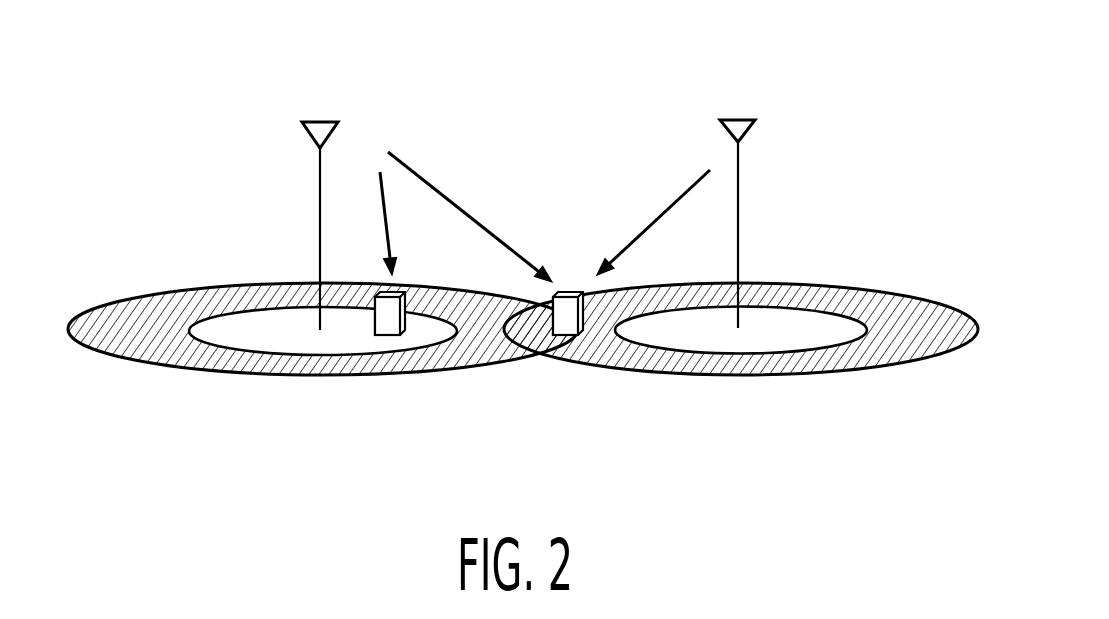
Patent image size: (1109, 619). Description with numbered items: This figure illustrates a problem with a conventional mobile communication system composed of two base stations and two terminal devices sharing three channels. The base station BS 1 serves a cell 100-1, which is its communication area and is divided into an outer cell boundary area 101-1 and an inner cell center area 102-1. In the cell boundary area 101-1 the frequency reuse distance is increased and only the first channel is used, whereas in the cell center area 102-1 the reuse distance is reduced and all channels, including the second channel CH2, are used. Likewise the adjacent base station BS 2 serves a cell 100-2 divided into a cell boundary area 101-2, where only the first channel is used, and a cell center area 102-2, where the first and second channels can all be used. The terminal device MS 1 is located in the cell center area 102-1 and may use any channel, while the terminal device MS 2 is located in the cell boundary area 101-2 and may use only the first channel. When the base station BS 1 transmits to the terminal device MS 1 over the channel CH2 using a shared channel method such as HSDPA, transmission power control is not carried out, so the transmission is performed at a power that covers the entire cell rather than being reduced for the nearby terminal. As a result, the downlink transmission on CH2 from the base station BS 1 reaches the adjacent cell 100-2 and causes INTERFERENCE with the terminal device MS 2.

The cell 100-1 is at (178, 368).
The cell 100-2 is at (857, 372).
The cell boundary area 101-1 is at (150, 315).
The cell boundary area 101-2 is at (910, 317).
The cell center area 102-1 is at (310, 342).
The cell center area 102-2 is at (817, 342).
The base station BS 1 is at (317, 118).
The base station BS 2 is at (730, 118).
The terminal device MS 1 is at (388, 328).
The terminal device MS 2 is at (563, 328).
The second channel CH2 is at (383, 203).
The interference INTERFERENCE is at (433, 188).